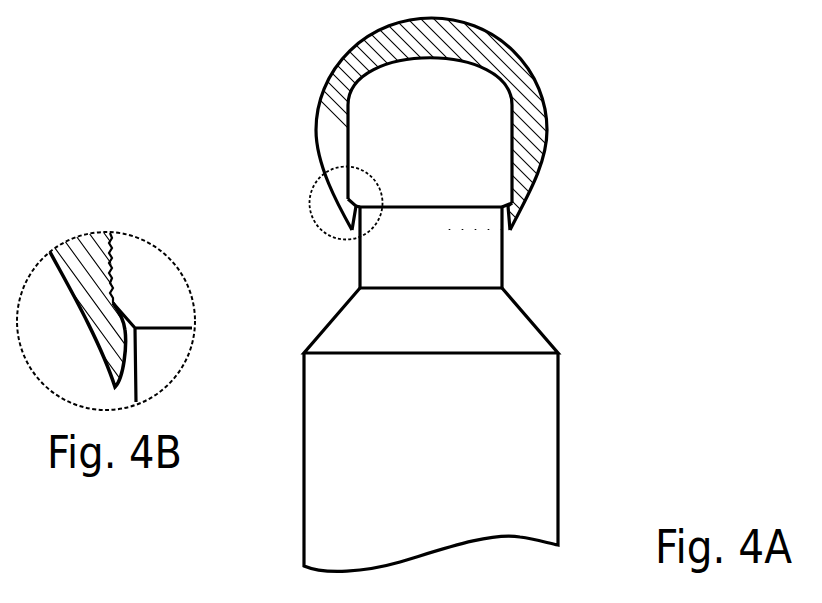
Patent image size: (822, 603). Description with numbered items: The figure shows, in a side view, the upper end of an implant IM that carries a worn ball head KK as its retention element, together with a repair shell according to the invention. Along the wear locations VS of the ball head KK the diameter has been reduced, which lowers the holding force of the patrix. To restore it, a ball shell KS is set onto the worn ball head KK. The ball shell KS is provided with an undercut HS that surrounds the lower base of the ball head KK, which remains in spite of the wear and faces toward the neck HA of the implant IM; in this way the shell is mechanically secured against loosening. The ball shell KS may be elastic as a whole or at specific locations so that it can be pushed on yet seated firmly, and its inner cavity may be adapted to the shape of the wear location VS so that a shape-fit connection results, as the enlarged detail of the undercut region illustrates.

The ball shell KS is at (477, 50).
The ball head KK is at (430, 135).
The wear location VS is at (515, 145).
The undercut HS is at (310, 208).
The neck HA is at (463, 257).
The implant IM is at (503, 427).